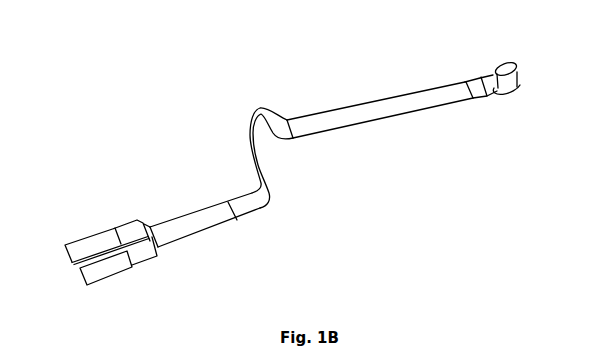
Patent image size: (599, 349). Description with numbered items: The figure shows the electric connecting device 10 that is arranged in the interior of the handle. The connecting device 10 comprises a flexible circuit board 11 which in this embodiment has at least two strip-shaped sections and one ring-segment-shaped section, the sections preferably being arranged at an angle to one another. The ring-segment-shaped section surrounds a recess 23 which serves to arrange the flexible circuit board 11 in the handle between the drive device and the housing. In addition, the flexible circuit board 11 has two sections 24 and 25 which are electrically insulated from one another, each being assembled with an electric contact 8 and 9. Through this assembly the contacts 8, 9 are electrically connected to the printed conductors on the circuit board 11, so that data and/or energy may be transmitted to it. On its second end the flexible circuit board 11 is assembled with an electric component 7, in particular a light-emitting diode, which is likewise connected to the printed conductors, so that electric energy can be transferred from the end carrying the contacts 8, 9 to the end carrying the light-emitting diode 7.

The electric connecting device 10 is at (90, 103).
The flexible circuit board 11 is at (360, 111).
The recess 23 is at (273, 162).
The electric component 7 is at (497, 76).
The electric contact 8 is at (91, 246).
The electric contact 9 is at (113, 262).
The section 24 is at (130, 230).
The section 25 is at (142, 251).